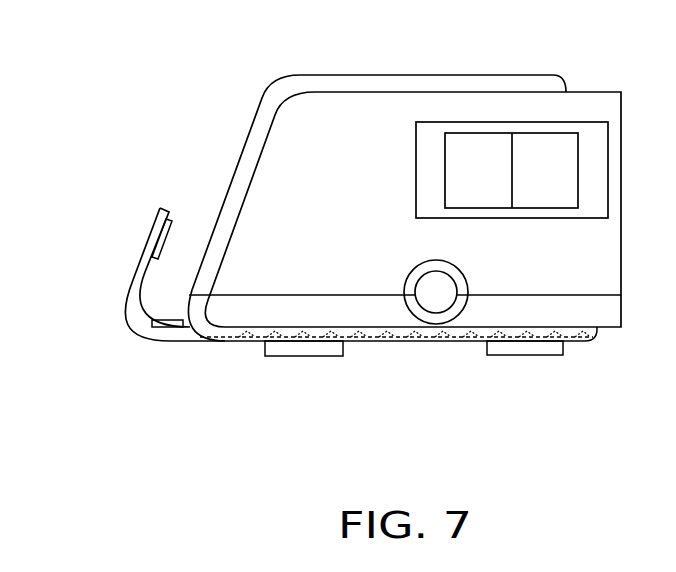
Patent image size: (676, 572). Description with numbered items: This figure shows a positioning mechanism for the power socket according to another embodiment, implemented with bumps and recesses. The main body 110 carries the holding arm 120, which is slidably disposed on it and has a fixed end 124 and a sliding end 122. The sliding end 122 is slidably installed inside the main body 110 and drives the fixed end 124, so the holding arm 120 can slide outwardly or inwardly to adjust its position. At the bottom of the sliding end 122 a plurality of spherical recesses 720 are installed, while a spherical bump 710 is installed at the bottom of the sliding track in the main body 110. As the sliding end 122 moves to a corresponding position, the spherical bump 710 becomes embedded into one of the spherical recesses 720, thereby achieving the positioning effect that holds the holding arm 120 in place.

The main body 110 is at (253, 128).
The holding arm 120 is at (126, 328).
The sliding end 122 is at (175, 341).
The fixed end 124 is at (150, 240).
The spherical bump 710 is at (249, 343).
The spherical recesses 720 is at (250, 331).